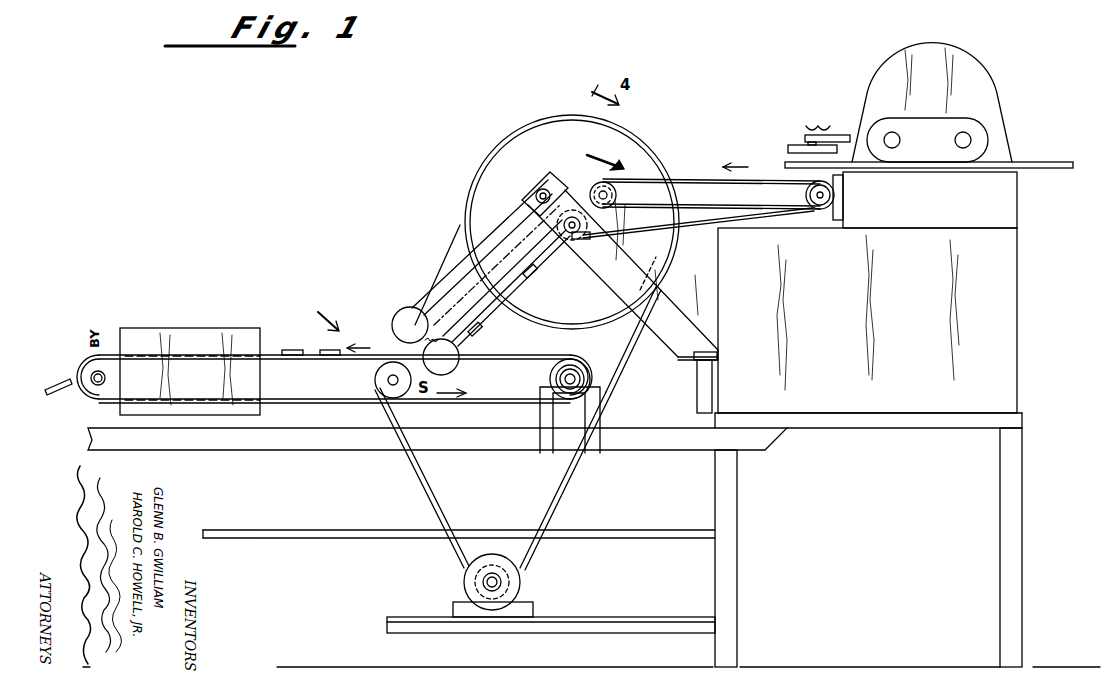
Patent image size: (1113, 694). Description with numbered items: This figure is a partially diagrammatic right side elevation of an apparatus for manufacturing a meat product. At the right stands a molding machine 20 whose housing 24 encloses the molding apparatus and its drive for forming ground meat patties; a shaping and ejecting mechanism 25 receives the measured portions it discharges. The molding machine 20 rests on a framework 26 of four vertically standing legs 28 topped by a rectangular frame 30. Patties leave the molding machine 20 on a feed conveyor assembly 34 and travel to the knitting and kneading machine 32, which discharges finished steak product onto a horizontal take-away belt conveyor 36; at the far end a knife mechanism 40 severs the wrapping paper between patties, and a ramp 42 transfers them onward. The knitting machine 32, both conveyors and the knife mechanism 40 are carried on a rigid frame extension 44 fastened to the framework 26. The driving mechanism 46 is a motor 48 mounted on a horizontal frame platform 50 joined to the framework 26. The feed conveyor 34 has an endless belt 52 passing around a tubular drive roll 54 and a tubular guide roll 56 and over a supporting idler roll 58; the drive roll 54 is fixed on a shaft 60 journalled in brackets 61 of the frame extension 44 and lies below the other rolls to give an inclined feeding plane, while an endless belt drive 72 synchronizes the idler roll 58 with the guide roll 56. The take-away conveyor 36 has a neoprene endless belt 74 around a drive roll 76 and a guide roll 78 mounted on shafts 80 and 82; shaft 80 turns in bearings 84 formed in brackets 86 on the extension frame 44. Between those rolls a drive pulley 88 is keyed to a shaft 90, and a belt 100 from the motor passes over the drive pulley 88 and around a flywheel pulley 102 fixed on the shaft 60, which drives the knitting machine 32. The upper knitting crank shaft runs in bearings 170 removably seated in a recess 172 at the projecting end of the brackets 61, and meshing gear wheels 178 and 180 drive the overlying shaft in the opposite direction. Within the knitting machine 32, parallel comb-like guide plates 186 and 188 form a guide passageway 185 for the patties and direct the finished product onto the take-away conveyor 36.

The molding machine 20 is at (1012, 86).
The housing 24 is at (1020, 278).
The shaping and ejecting mechanism 25 is at (788, 142).
The framework 26 is at (1030, 441).
The legs 28 is at (737, 507).
The rectangular frame 30 is at (868, 430).
The knitting and kneading machine 32 is at (452, 263).
The feed conveyor assembly 34 is at (690, 170).
The take-away belt conveyor 36 is at (272, 352).
The knife mechanism 40 is at (190, 328).
The ramp 42 is at (62, 382).
The frame extension 44 is at (652, 443).
The driving mechanism 46 is at (545, 578).
The motor 48 is at (463, 582).
The frame platform 50 is at (393, 617).
The endless belt 52 is at (616, 156).
The drive roll 54 is at (583, 238).
The guide roll 56 is at (815, 212).
The supporting idler roll 58 is at (617, 196).
The shaft 60 is at (592, 228).
The brackets 61 is at (668, 312).
The endless belt drive 72 is at (748, 215).
The endless belt 74 is at (282, 362).
The drive roll 76 is at (548, 375).
The guide roll 78 is at (90, 392).
The shaft 80 is at (576, 372).
The shaft 82 is at (110, 378).
The bearings 84 is at (585, 384).
The brackets 86 is at (603, 416).
The drive pulley 88 is at (375, 380).
The shaft 90 is at (380, 395).
The belt 100 is at (415, 470).
The flywheel pulley 102 is at (530, 125).
The bearings 170 is at (555, 190).
The recess 172 is at (542, 188).
The gear wheel 178 is at (448, 372).
The gear wheel 180 is at (397, 318).
The guide passageway 185 is at (520, 205).
The lower comb-like guide plate 186 is at (483, 322).
The upper comb-like guide plate 188 is at (450, 236).